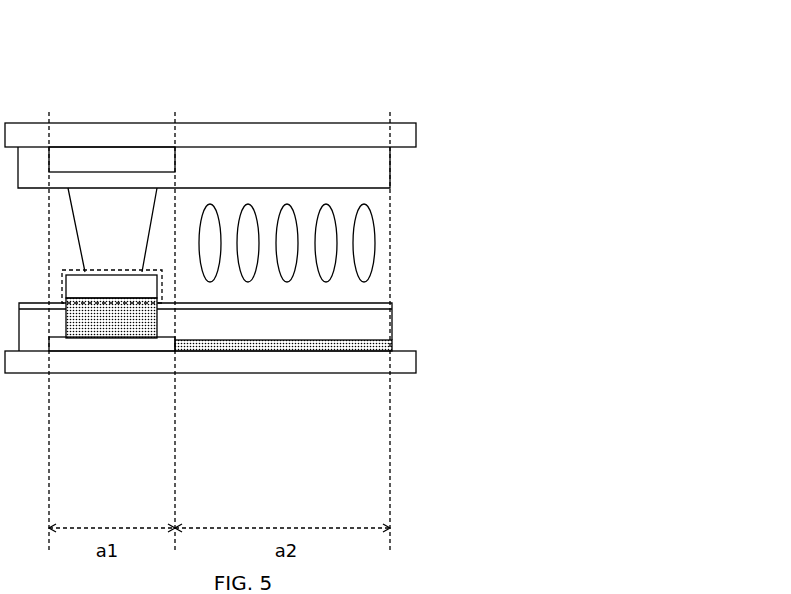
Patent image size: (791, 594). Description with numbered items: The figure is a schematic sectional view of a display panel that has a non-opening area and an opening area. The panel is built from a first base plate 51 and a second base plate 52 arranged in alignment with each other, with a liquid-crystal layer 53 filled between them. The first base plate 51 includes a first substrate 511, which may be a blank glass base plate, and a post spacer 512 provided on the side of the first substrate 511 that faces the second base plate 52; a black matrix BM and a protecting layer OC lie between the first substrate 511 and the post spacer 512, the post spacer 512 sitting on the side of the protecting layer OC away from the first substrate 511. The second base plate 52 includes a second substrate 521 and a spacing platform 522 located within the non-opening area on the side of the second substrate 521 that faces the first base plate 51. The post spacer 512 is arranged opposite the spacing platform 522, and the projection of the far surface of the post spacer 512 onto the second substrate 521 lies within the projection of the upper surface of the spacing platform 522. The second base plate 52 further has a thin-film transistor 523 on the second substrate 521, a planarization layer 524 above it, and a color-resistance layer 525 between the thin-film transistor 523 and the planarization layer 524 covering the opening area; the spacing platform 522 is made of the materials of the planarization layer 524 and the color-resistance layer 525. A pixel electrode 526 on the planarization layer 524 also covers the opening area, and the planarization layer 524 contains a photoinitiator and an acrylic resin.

The first base plate 51 is at (62, 44).
The first substrate 511 is at (75, 133).
The post spacer 512 is at (127, 217).
The second base plate 52 is at (66, 443).
The second substrate 521 is at (286, 360).
The spacing platform 522 is at (148, 340).
The thin-film transistor 523 is at (75, 345).
The planarization layer 524 is at (230, 322).
The color-resistance layer 525 is at (112, 340).
The pixel electrode 526 is at (332, 305).
The liquid-crystal layer 53 is at (362, 243).